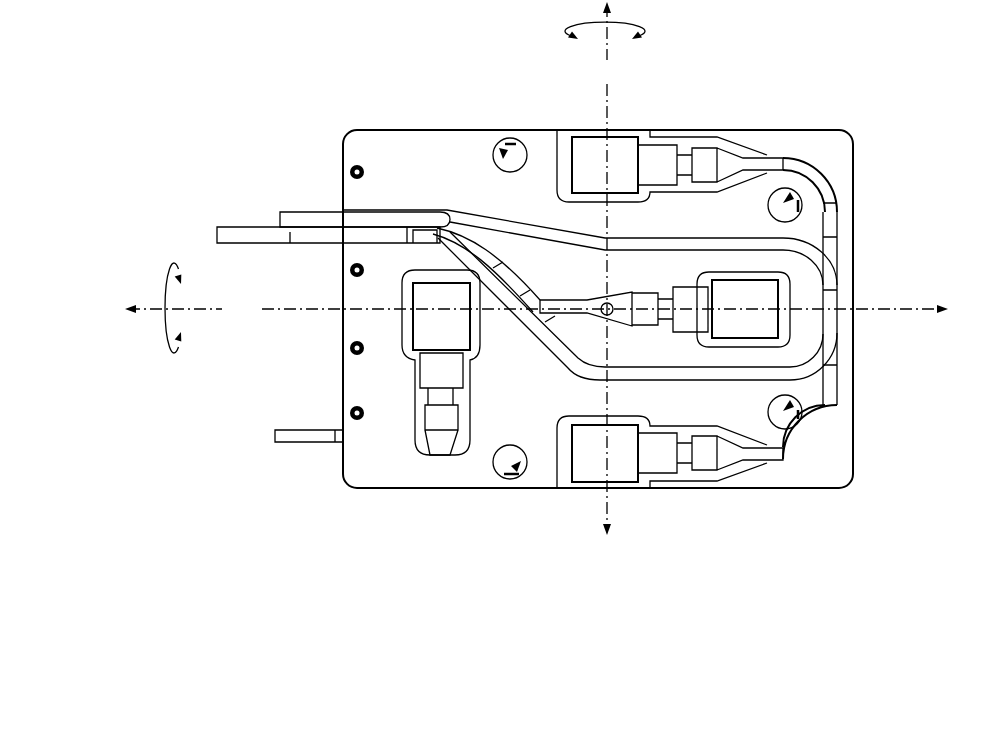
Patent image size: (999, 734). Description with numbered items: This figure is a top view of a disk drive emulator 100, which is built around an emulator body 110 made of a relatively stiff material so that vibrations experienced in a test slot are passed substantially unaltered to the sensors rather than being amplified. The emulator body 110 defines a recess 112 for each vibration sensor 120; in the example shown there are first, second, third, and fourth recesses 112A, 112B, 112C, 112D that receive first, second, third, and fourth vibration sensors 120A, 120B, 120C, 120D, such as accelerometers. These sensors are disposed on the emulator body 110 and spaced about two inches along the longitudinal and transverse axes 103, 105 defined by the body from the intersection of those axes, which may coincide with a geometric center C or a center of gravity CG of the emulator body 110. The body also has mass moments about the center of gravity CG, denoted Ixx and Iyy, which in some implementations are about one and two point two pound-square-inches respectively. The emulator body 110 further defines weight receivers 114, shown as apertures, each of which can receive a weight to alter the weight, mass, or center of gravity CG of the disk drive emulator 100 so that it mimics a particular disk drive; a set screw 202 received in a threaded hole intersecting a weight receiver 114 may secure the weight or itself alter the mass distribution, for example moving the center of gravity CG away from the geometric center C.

The disk drive emulator 100 is at (310, 67).
The emulator body 110 is at (840, 145).
The weight receiver 114 is at (503, 142).
The set screw 202 is at (349, 168).
The longitudinal axis 103 is at (536, 311).
The transverse axis 105 is at (608, 268).
The mass moment about the center of gravity Ixx is at (158, 314).
The mass moment about the center of gravity Iyy is at (621, 22).
The vibration sensor 120 is at (580, 307).
The first vibration sensor 120A is at (599, 135).
The second vibration sensor 120B is at (750, 318).
The third vibration sensor 120C is at (610, 462).
The fourth vibration sensor 120D is at (437, 320).
The recess 112 is at (607, 309).
The first recess 112A is at (688, 140).
The second recess 112B is at (767, 342).
The third recess 112C is at (737, 466).
The fourth recess 112D is at (403, 288).
The geometric center C is at (523, 315).
The center of gravity CG is at (604, 316).